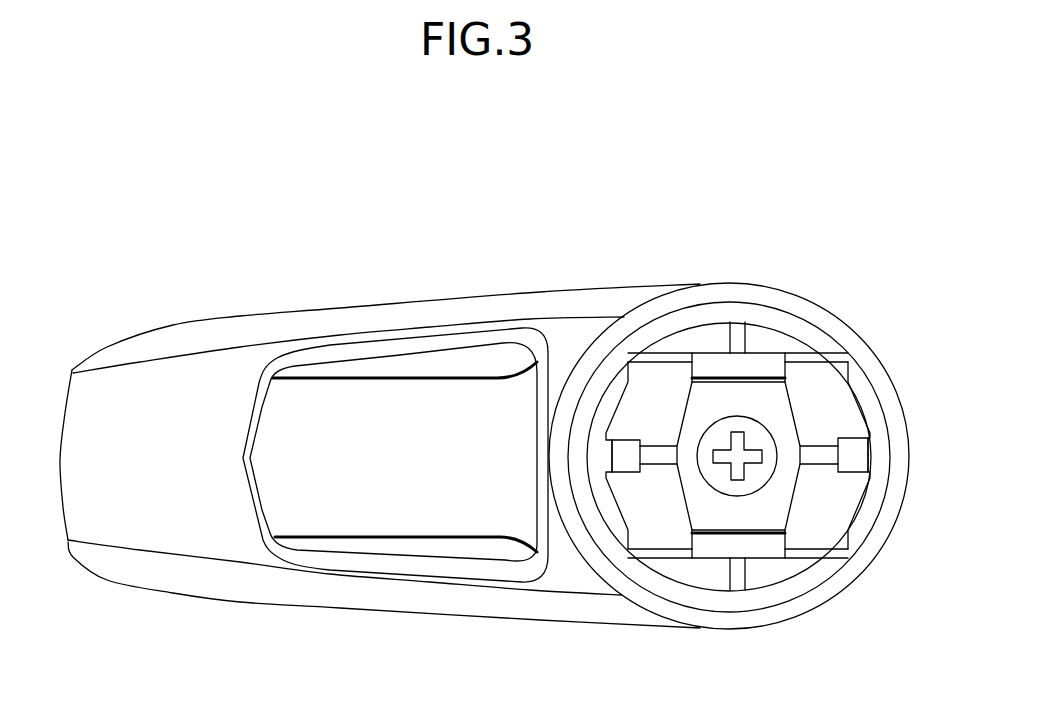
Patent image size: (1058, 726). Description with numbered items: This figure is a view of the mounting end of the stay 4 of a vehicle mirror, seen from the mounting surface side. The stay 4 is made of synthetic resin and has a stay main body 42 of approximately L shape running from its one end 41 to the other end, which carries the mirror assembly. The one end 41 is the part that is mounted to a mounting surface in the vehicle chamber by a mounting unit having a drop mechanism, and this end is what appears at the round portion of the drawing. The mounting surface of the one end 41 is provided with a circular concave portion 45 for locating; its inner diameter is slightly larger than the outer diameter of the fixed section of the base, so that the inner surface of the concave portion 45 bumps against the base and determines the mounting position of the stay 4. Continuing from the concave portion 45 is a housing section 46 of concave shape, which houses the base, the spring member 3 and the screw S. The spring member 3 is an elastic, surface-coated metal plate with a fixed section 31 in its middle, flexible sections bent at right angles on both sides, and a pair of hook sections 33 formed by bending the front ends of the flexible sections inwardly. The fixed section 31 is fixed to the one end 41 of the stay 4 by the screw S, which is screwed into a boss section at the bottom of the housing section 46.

The spring member 3 is at (680, 520).
The stay 4 is at (478, 242).
The fixed section 31 is at (695, 403).
The hook sections 33 is at (712, 362).
The one end 41 is at (788, 290).
The stay main body 42 is at (270, 308).
The circular concave portion 45 is at (828, 337).
The housing section 46 is at (860, 405).
The screw S is at (758, 482).